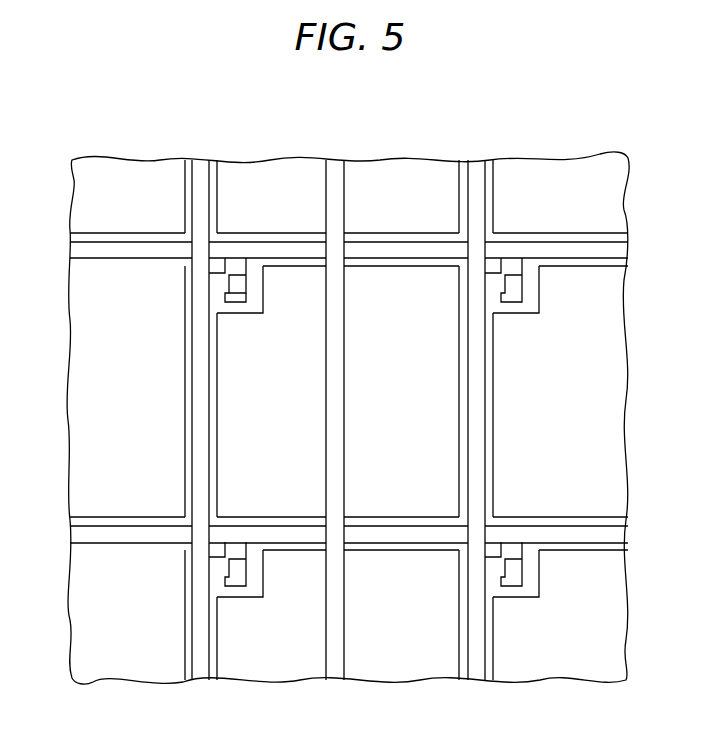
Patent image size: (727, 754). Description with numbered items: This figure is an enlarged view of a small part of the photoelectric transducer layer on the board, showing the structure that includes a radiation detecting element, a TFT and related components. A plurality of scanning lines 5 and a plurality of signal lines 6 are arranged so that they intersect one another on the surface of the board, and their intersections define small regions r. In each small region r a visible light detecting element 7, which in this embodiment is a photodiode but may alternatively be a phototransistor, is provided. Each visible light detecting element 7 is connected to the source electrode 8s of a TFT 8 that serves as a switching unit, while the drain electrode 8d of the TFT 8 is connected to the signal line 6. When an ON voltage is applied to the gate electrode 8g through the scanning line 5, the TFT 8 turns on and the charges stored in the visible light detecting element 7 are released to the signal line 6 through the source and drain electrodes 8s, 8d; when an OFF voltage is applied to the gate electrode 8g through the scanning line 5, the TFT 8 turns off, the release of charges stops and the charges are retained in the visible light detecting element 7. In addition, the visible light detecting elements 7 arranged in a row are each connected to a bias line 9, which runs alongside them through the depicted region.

The scanning line 5 is at (602, 247).
The signal line 6 is at (186, 193).
The visible light detecting element 7 is at (250, 436).
The TFT 8 is at (277, 342).
The gate electrode 8g is at (233, 262).
The source electrode 8s is at (247, 276).
The drain electrode 8d is at (222, 282).
The bias line 9 is at (344, 203).
The small region r is at (430, 428).